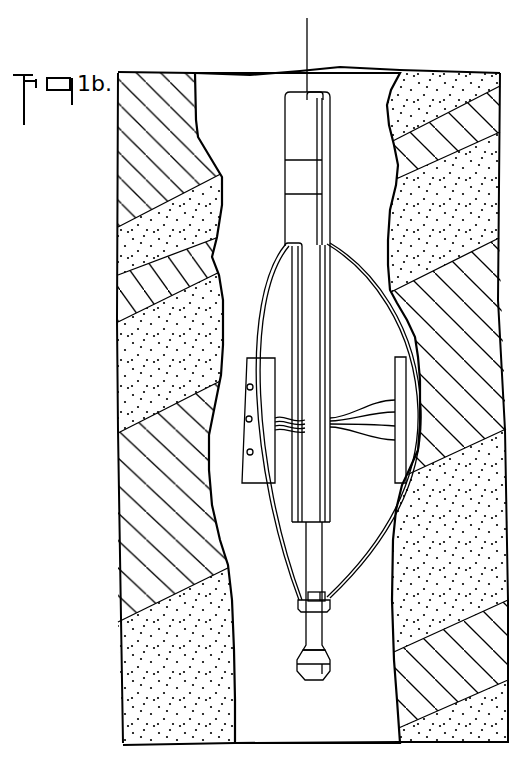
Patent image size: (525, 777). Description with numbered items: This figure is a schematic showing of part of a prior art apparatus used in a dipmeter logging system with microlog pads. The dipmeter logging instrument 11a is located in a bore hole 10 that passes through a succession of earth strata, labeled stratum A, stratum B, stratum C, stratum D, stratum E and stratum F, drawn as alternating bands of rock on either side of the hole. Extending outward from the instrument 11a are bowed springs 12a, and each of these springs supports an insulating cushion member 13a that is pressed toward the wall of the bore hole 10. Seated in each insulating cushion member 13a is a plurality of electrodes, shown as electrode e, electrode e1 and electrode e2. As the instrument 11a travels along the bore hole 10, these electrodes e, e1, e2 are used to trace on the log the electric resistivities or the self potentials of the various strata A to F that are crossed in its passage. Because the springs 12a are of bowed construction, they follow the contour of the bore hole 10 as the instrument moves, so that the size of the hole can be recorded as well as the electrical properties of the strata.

The bore hole 10 is at (222, 181).
The dipmeter logging instrument 11a is at (295, 112).
The bowed springs 12a is at (352, 262).
The insulating cushion member 13a is at (253, 487).
The electrode e is at (247, 388).
The electrode e1 is at (246, 419).
The electrode e2 is at (248, 453).
The stratum A is at (179, 150).
The stratum B is at (179, 219).
The stratum C is at (179, 275).
The stratum D is at (179, 352).
The stratum E is at (179, 496).
The stratum F is at (179, 652).